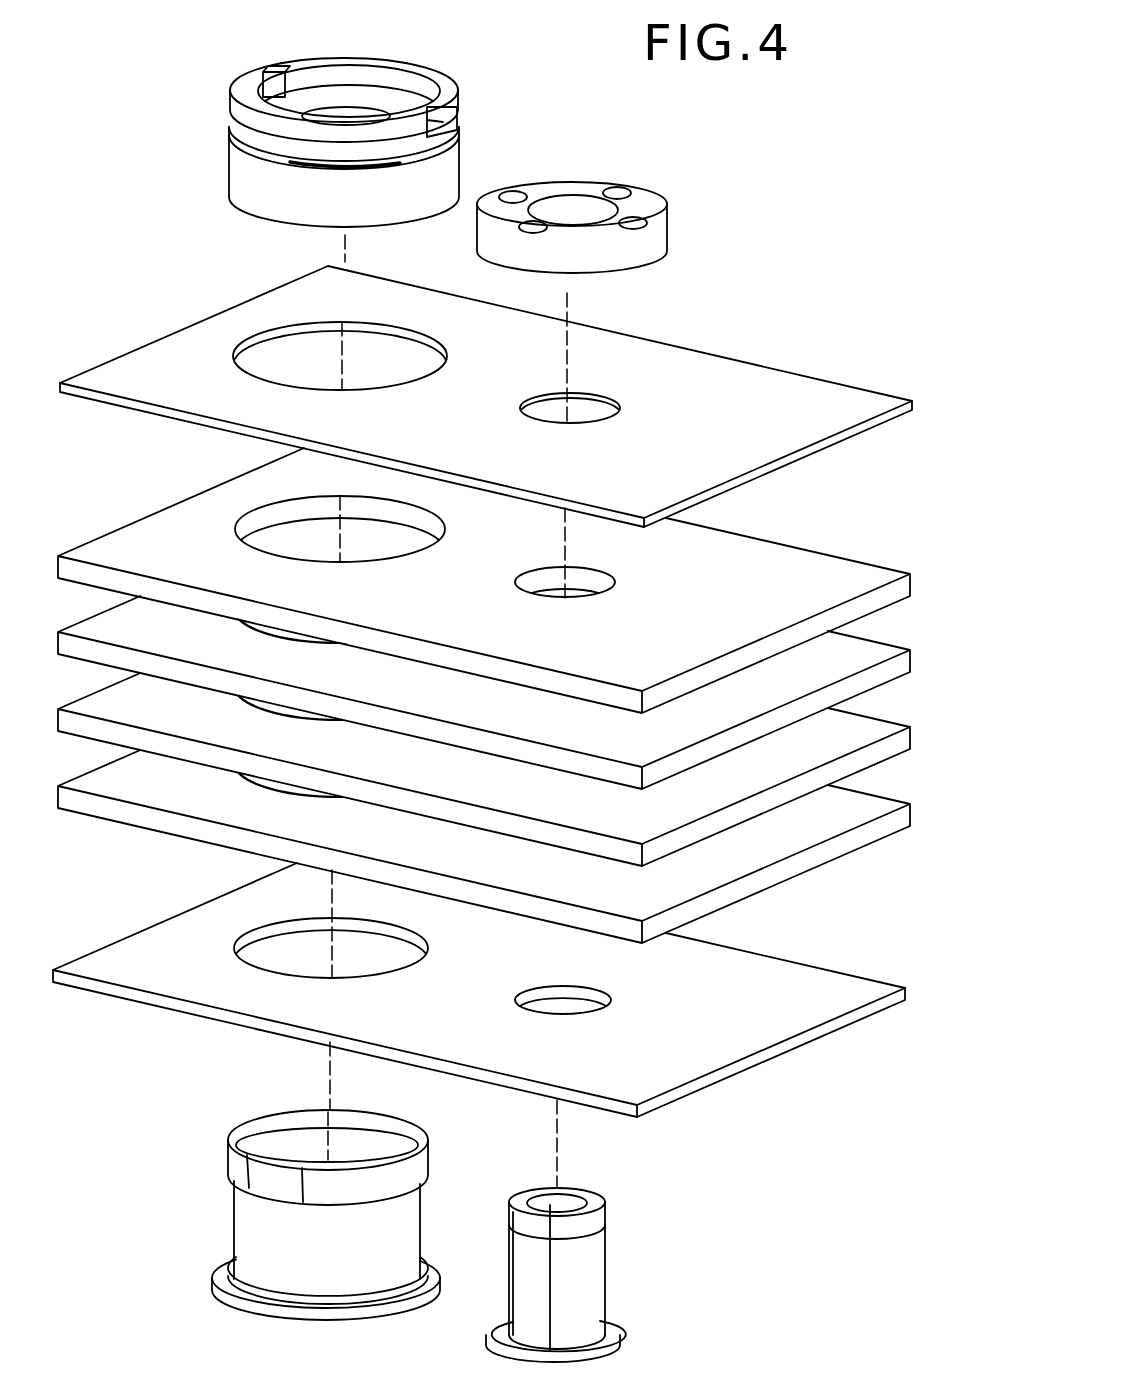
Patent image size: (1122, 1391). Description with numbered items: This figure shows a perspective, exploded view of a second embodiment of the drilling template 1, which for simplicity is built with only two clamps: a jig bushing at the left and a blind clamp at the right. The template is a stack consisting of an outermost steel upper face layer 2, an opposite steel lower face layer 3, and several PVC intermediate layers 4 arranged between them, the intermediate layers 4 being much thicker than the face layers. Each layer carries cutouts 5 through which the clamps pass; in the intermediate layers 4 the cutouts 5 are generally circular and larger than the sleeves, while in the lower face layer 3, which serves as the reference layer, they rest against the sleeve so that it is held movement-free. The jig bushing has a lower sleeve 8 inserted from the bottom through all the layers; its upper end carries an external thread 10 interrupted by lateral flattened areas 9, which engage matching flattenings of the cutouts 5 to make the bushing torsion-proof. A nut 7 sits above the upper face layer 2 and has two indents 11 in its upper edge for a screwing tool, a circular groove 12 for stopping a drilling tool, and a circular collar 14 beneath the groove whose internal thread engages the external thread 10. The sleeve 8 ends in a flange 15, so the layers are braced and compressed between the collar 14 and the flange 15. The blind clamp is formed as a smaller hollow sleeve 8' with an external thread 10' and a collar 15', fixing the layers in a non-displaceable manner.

The drilling template 1 is at (880, 290).
The upper face layer 2 is at (803, 387).
The lower face layer 3 is at (760, 1023).
The intermediate layer 4 is at (830, 570).
The cutout 5 is at (587, 590).
The nut 7 is at (388, 93).
The sleeve 8 is at (270, 1230).
The flattened area 9 is at (280, 1180).
The external thread 10 is at (360, 1157).
The indent 11 is at (280, 72).
The circular groove 12 is at (273, 143).
The circular collar 14 is at (263, 197).
The collar or flange 15 is at (326, 1312).
The hollow sleeve 8' is at (597, 1277).
The external thread 10' is at (615, 1198).
The collar 15' is at (592, 1341).